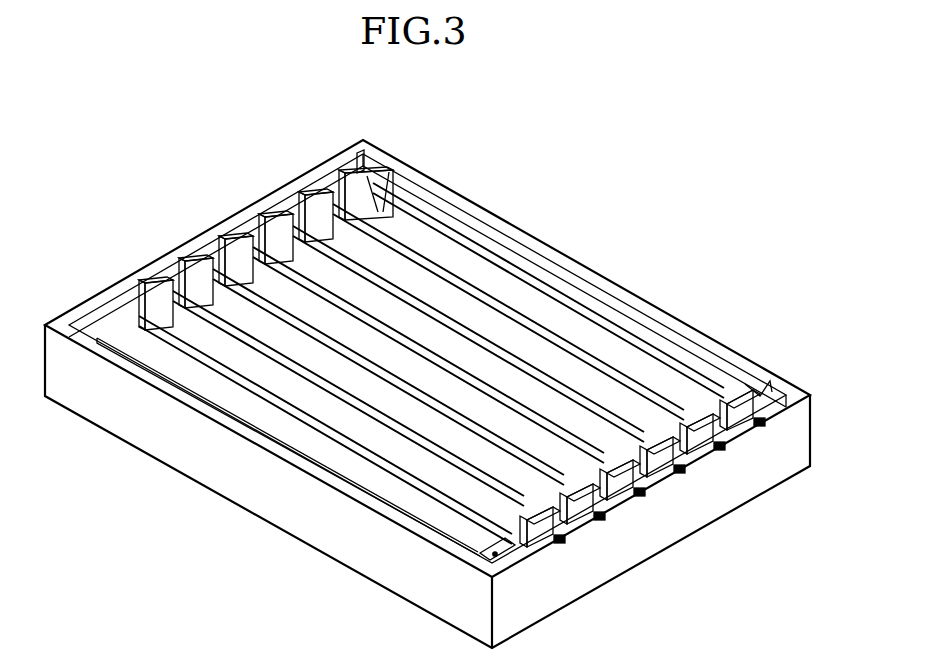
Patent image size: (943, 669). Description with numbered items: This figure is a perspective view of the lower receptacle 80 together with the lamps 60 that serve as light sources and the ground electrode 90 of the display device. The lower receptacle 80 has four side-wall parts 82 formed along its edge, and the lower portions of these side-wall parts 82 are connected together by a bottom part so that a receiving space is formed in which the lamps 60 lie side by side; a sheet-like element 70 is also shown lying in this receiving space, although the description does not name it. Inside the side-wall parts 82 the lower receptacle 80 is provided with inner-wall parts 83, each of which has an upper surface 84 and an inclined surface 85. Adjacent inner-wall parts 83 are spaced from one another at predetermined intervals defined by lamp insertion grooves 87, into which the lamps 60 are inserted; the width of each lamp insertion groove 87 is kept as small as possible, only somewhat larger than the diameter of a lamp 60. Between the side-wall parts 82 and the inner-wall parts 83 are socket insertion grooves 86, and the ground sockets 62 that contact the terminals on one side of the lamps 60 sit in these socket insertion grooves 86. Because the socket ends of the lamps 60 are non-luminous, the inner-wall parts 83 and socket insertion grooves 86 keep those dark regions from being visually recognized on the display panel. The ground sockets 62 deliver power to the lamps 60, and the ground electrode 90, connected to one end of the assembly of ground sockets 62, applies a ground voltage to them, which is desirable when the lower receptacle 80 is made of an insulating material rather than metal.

The lamp 60 is at (530, 318).
The ground socket 62 is at (570, 515).
The reflector sheet 70 is at (690, 360).
The lower receptacle 80 is at (200, 248).
The side-wall part 82 is at (135, 300).
The inner-wall part 83 is at (132, 242).
The upper surface 84 is at (207, 272).
The inclined surface 85 is at (207, 273).
The socket insertion groove 86 is at (360, 152).
The lamp insertion groove 87 is at (137, 300).
The ground electrode 90 is at (497, 554).